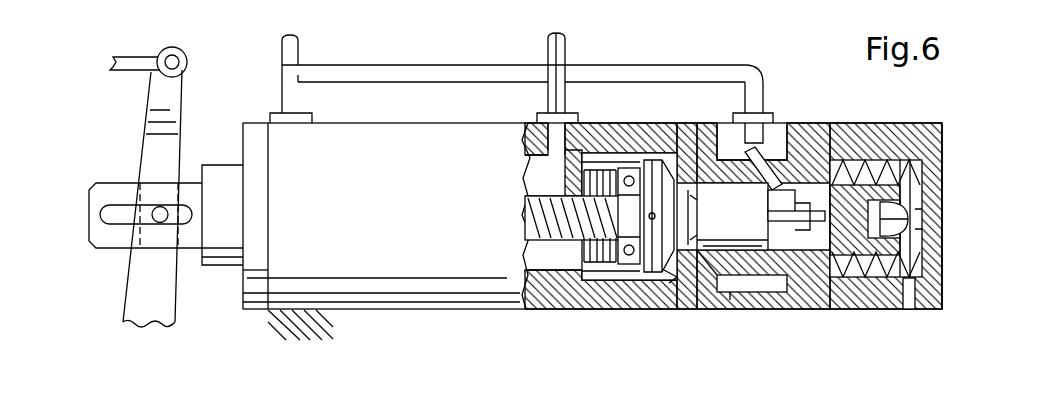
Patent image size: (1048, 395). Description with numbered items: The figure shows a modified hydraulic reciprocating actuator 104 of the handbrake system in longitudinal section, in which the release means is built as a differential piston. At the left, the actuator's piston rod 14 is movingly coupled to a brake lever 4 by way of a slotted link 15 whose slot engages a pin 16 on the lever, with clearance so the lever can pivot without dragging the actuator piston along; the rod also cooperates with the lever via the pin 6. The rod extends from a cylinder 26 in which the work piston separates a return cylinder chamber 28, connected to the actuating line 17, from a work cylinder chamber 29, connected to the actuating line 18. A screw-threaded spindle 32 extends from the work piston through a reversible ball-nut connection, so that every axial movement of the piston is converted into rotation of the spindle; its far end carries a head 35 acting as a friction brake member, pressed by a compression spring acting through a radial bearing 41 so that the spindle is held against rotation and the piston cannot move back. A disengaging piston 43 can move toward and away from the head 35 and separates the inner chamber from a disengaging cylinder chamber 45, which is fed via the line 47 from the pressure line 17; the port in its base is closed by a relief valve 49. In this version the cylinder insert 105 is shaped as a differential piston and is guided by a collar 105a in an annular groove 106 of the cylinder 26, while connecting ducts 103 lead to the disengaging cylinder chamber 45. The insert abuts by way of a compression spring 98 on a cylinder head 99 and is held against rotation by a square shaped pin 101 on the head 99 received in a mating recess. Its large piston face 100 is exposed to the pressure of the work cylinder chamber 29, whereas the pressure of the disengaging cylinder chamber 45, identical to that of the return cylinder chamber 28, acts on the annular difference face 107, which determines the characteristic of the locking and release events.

The brake lever 4 is at (130, 312).
The pin 6 is at (133, 70).
The piston rod 14 is at (220, 248).
The link 15 is at (113, 237).
The pin 16 is at (158, 207).
The actuating line 17 is at (298, 50).
The actuating line 18 is at (565, 50).
The cylinder 26 is at (440, 290).
The return cylinder chamber 28 is at (348, 285).
The work cylinder chamber 29 is at (547, 285).
The screw-threaded spindle 32 is at (538, 238).
The head 35 is at (668, 272).
The radial bearing 41 is at (622, 265).
The disengaging piston 43 is at (728, 216).
The disengaging cylinder chamber 45 is at (778, 197).
The line 47 is at (755, 78).
The relief valve 49 is at (789, 230).
The compression spring 98 is at (872, 280).
The cylinder head 99 is at (930, 250).
The large piston face 100 is at (672, 280).
The square shaped pin 101 is at (915, 207).
The connecting duct 103 is at (775, 150).
The reciprocating actuator 104 is at (970, 141).
The cylinder insert 105 is at (818, 270).
The collar 105a is at (720, 284).
The annular groove 106 is at (765, 290).
The annular difference face 107 is at (720, 283).